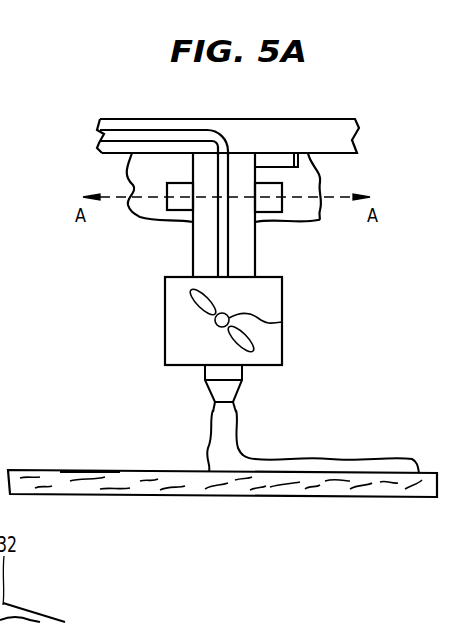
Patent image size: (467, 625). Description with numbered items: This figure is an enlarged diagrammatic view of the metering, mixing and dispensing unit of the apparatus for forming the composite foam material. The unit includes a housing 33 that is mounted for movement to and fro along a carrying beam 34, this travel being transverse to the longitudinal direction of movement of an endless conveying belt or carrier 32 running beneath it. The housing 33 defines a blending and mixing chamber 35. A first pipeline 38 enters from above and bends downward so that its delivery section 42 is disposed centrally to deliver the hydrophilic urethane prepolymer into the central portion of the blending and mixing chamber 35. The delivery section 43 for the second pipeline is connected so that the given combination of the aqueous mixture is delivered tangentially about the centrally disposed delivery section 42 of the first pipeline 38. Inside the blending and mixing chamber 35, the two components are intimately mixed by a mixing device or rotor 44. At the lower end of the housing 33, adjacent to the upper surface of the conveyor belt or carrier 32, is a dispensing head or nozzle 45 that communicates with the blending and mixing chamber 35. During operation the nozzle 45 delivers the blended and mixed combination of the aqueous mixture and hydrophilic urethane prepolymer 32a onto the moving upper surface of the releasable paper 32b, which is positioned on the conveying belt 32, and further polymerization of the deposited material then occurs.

The endless conveying belt or carrier 32 is at (36, 470).
The blended and mixed combination of aqueous mixture and hydrophilic urethane prepol 32a is at (375, 457).
The releasable paper 32b is at (90, 470).
The housing 33 is at (298, 214).
The carrying beam 34 is at (308, 182).
The blending and mixing chamber 35 is at (192, 244).
The first pipeline 38 is at (123, 136).
The delivery section of the first pipeline 42 is at (226, 252).
The delivery section for the second pipeline 43 is at (300, 163).
The mixing device or rotor 44 is at (282, 322).
The dispensing head or nozzle 45 is at (240, 390).